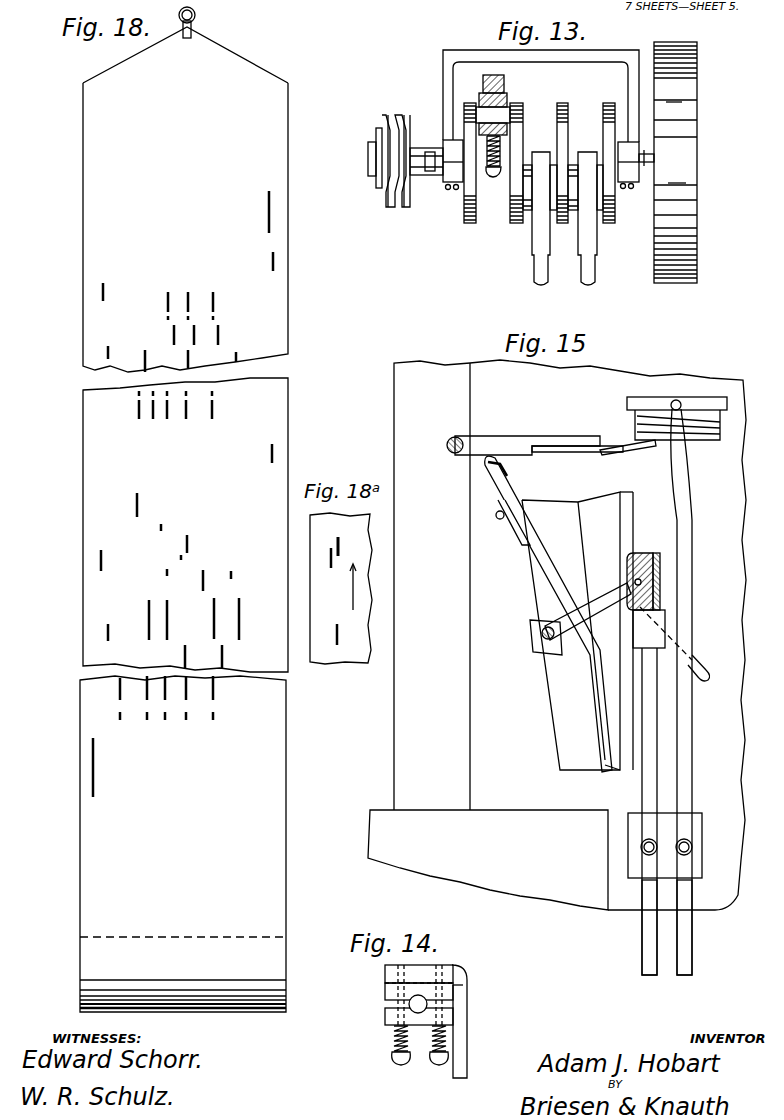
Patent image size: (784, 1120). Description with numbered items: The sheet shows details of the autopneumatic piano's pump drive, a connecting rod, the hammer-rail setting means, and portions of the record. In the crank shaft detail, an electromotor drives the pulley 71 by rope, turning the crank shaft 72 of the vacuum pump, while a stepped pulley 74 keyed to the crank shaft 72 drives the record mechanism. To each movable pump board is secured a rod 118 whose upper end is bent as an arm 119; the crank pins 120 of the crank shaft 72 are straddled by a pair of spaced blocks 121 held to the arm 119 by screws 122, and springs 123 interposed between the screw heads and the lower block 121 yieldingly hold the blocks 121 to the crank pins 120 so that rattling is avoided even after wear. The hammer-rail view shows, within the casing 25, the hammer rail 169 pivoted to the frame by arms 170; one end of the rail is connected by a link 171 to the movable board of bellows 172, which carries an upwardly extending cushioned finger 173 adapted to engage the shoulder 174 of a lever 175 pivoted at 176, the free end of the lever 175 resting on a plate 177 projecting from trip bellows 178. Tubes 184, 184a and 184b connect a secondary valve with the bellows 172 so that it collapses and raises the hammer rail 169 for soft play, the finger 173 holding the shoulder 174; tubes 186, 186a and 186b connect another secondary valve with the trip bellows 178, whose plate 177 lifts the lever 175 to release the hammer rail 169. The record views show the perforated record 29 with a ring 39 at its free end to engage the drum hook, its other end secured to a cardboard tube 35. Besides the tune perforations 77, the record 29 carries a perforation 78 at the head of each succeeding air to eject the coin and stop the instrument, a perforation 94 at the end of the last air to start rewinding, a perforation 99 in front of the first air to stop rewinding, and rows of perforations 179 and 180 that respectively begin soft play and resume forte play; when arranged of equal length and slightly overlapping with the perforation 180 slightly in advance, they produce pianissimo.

In FIG. 18, the perforated double-ended music sheet or record 29 is at (184, 519).
In FIG. 18A, the perforated double-ended music sheet or record 29 is at (326, 664).
In FIG. 18, the ring 39 is at (197, 16).
In FIG. 18, the perforation 99 is at (266, 212).
In FIG. 18, the additional perforation 78 is at (276, 263).
In FIG. 18, the perforations 179 is at (99, 296).
In FIG. 18A, the perforations 179 is at (330, 565).
In FIG. 18, the perforations 180 is at (105, 354).
In FIG. 18A, the perforations 180 is at (340, 536).
In FIG. 18, the perforations 77 is at (172, 321).
In FIG. 18, the perforation 94 is at (97, 764).
In FIG. 18, the tube 35 is at (200, 936).
In FIG. 13, the stepped pulley 74 is at (385, 196).
In FIG. 13, the bent upper end of rod / arm 119 is at (487, 79).
In FIG. 14, the bent upper end of rod / arm 119 is at (384, 972).
In FIG. 13, the spaced blocks 121 is at (532, 128).
In FIG. 14, the spaced blocks 121 is at (384, 992).
In FIG. 13, the crank pins 120 is at (522, 112).
In FIG. 13, the springs 123 is at (500, 152).
In FIG. 14, the springs 123 is at (390, 1040).
In FIG. 13, the screws 122 is at (494, 178).
In FIG. 14, the screws 122 is at (438, 1066).
In FIG. 13, the rod 118 is at (585, 285).
In FIG. 14, the rod 118 is at (468, 1062).
In FIG. 13, the crank shaft 72 is at (645, 168).
In FIG. 13, the pulley 71 is at (675, 162).
In FIG. 15, the casing 25 is at (557, 635).
In FIG. 15, the trip bellows 178 is at (637, 420).
In FIG. 15, the lever 175 is at (510, 440).
In FIG. 15, the pivot 176 is at (451, 452).
In FIG. 15, the shoulder 174 is at (538, 447).
In FIG. 15, the plate 177 is at (628, 457).
In FIG. 15, the tube 186a is at (686, 502).
In FIG. 15, the cushioned finger 173 is at (497, 478).
In FIG. 15, the bellows 172 is at (577, 631).
In FIG. 15, the link 171 is at (597, 608).
In FIG. 15, the hammer rail 169 is at (637, 553).
In FIG. 15, the arms 170 is at (665, 632).
In FIG. 15, the tube 184a is at (652, 706).
In FIG. 15, the tube 184 is at (641, 934).
In FIG. 15, the tube 186 is at (692, 936).
In FIG. 15, the tube 184b is at (640, 848).
In FIG. 15, the tube 186b is at (694, 849).